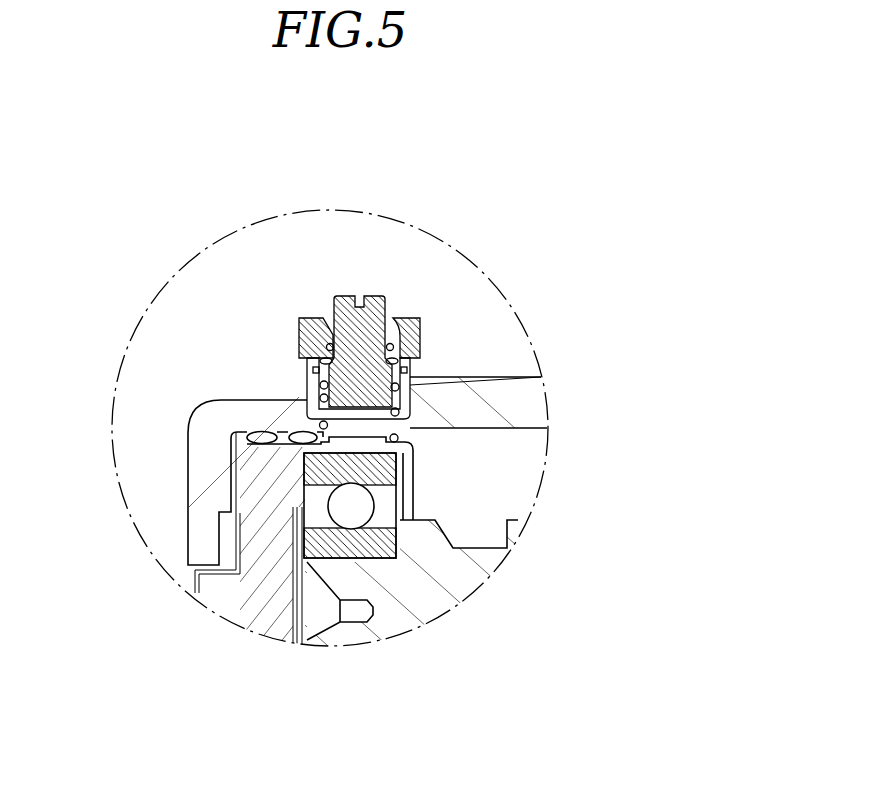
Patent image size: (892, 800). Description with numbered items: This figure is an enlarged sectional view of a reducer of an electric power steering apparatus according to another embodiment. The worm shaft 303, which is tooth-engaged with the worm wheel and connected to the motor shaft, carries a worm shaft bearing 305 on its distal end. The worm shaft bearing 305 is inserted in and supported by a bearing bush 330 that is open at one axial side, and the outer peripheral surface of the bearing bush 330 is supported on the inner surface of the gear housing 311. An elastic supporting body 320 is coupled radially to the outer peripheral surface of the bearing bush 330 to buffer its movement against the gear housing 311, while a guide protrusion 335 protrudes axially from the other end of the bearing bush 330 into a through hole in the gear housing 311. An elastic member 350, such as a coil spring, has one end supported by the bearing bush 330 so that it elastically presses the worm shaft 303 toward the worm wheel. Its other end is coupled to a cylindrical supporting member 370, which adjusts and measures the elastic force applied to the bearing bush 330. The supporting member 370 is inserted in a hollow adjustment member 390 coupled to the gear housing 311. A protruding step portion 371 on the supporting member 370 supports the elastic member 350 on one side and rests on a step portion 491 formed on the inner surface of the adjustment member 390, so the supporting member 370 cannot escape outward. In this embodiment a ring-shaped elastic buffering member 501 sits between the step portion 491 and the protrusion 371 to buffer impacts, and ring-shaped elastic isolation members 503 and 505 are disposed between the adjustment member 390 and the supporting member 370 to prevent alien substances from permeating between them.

The worm shaft 303 is at (435, 602).
The worm shaft bearing 305 is at (386, 473).
The gear housing 311 is at (535, 398).
The elastic supporting body 320 is at (230, 436).
The bearing bush 330 is at (280, 612).
The guide protrusion 335 is at (203, 592).
The elastic member 350 is at (408, 411).
The supporting member 370 is at (378, 296).
The protruding step portion 371 is at (411, 377).
The adjustment member 390 is at (317, 318).
The step portion 491 is at (394, 318).
The buffering member 501 is at (421, 357).
The isolation member 503 is at (326, 347).
The isolation member 505 is at (308, 367).